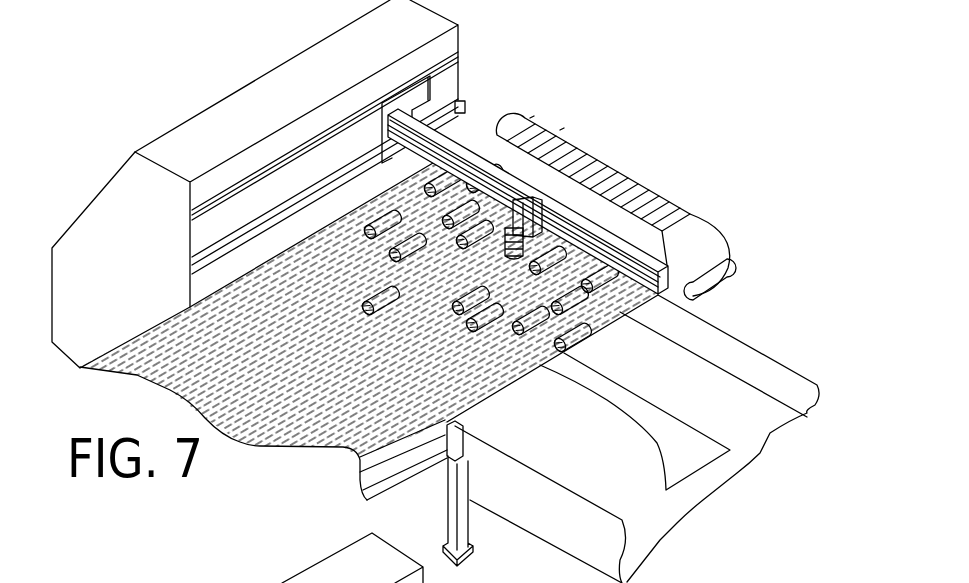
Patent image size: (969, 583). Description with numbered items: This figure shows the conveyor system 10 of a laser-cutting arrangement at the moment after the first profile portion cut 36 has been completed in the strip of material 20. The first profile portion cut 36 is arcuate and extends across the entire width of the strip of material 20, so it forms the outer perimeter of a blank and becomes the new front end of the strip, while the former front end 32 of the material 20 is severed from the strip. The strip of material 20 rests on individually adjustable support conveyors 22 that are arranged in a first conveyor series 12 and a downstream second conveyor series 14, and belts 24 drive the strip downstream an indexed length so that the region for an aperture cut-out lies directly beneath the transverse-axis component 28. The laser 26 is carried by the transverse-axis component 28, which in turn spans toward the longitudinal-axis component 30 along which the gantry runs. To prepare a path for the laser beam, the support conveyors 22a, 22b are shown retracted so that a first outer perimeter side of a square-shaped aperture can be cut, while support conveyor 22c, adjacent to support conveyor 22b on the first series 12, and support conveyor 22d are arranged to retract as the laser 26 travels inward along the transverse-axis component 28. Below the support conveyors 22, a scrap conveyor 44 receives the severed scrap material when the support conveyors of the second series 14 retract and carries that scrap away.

The conveyor system 10 is at (268, 38).
The first conveyor series 12 is at (185, 283).
The second conveyor series 14 is at (484, 88).
The strip of material 20 is at (610, 302).
The support conveyors 22 is at (537, 110).
The support conveyor 22a is at (450, 213).
The support conveyor 22b is at (518, 262).
The support conveyor 22c is at (487, 266).
The support conveyor 22d is at (367, 217).
The belts 24 is at (500, 130).
The laser 26 is at (503, 180).
The transverse-axis component 28 is at (420, 117).
The longitudinal-axis component 30 is at (205, 115).
The front end 32 is at (680, 437).
The first profile portion cut 36 is at (615, 195).
The scrap conveyor 44 is at (660, 513).